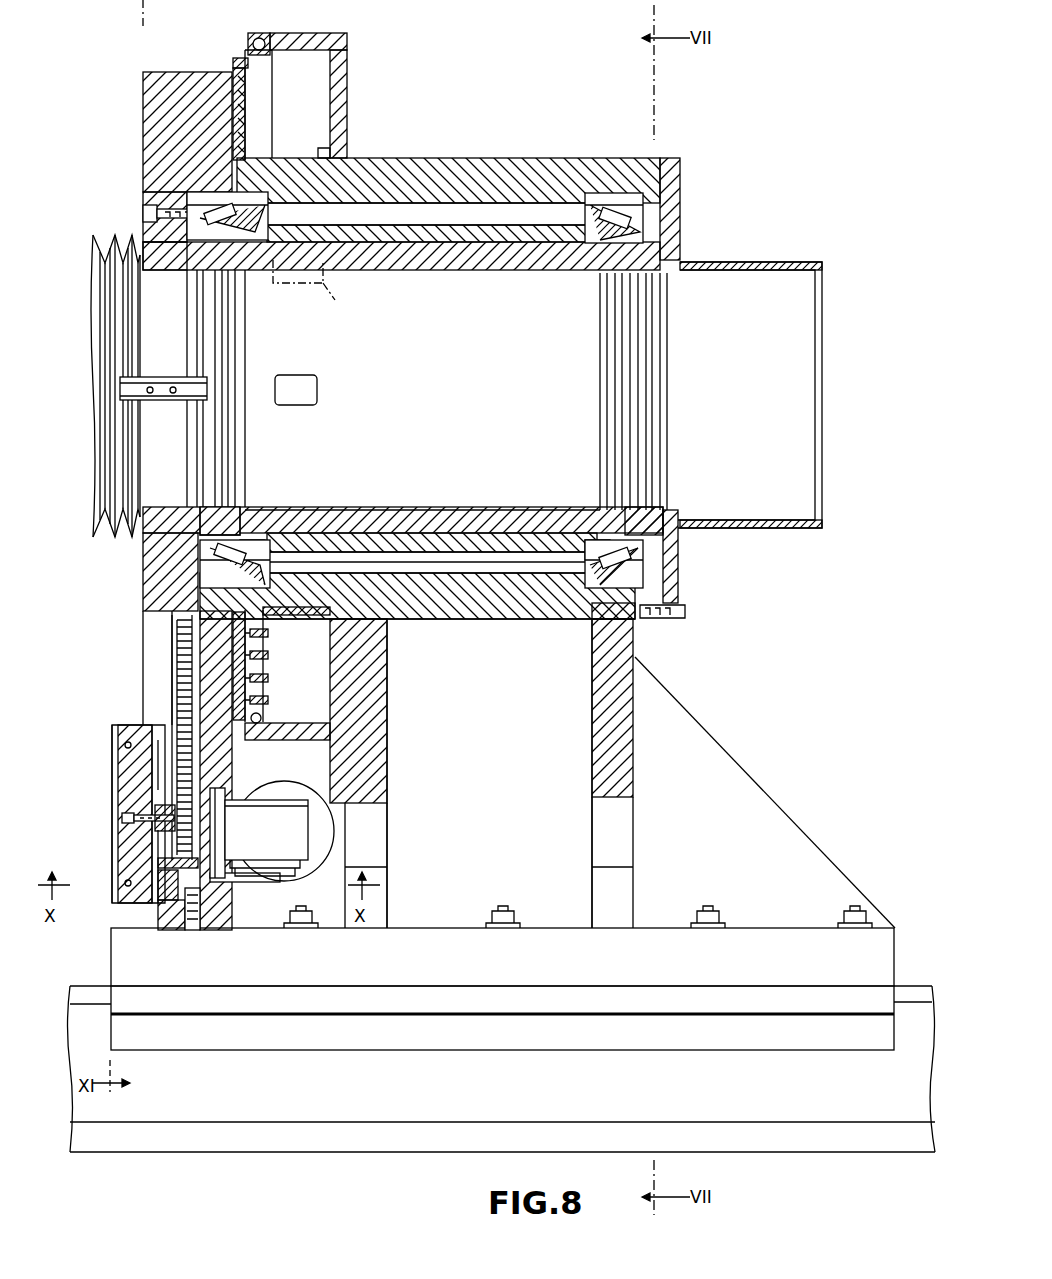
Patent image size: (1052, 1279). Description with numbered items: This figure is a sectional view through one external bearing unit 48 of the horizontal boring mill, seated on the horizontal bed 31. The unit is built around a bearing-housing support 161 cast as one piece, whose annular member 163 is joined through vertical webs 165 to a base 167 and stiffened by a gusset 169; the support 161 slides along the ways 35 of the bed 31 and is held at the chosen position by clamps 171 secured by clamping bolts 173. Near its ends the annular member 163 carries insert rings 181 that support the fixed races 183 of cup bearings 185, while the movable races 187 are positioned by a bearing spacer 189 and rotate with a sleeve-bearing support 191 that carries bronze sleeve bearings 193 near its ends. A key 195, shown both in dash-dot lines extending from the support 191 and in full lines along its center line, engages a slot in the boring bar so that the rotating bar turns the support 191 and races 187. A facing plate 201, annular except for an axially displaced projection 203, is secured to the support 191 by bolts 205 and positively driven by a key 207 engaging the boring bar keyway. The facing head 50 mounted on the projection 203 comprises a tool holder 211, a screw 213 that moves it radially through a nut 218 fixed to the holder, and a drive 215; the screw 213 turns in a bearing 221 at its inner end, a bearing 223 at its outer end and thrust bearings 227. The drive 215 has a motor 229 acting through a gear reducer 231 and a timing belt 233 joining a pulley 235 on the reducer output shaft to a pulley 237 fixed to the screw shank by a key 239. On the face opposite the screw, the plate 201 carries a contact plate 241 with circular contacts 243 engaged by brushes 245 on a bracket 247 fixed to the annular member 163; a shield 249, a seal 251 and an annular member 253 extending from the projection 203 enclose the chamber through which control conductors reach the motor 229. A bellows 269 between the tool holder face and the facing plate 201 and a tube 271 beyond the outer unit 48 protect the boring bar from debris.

The horizontal bed 31 is at (440, 1104).
The ways 35 is at (90, 998).
The external bearing unit 48 is at (537, 132).
The facing head 50 is at (108, 803).
The bearing-housing support 161 is at (490, 682).
The annular member 163 is at (510, 618).
The vertical webs 165 is at (386, 736).
The base 167 is at (423, 932).
The gusset 169 is at (763, 805).
The clamps 171 is at (812, 997).
The clamping bolts 173 is at (509, 906).
The insert rings 181 is at (268, 212).
The fixed races 183 is at (270, 566).
The cup bearings 185 is at (270, 545).
The movable races 187 is at (242, 512).
The bearing spacer 189 is at (440, 555).
The sleeve-bearing support 191 is at (442, 512).
The sleeve bearings 193 is at (244, 328).
The key 195 is at (312, 298).
The facing plate 201 is at (143, 138).
The projection 203 is at (150, 594).
The bolts 205 is at (146, 211).
The key 207 is at (166, 384).
The tool holder 211 is at (122, 758).
The screw 213 is at (200, 678).
The drive 215 is at (340, 902).
The nut 218 is at (112, 740).
The bearing 221 is at (170, 630).
The bearing 223 is at (150, 858).
The thrust bearings 227 is at (148, 906).
The motor 229 is at (318, 780).
The gear reducer 231 is at (282, 836).
The timing belt 233 is at (206, 925).
The pulley 235 is at (258, 883).
The pulley 237 is at (152, 875).
The key 239 is at (178, 925).
The contact plate 241 is at (255, 80).
The circular contacts 243 is at (262, 120).
The brushes 245 is at (262, 680).
The bracket 247 is at (268, 633).
The shield 249 is at (337, 68).
The seal 251 is at (248, 46).
The annular member 253 is at (237, 64).
The bellows 269 is at (98, 246).
The tube 271 is at (696, 262).